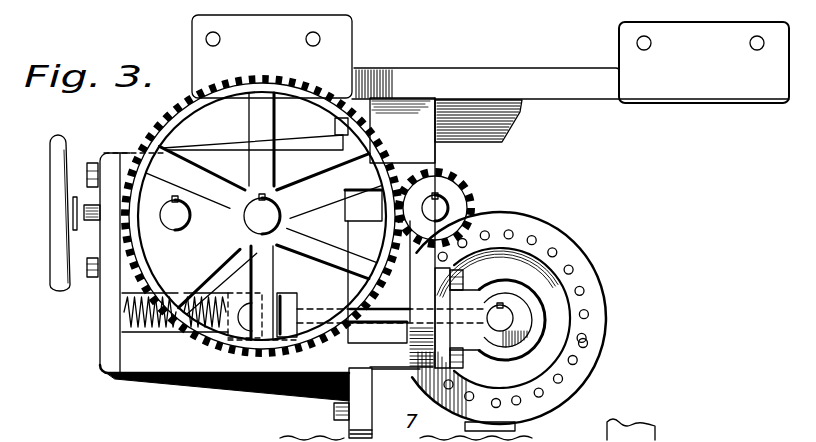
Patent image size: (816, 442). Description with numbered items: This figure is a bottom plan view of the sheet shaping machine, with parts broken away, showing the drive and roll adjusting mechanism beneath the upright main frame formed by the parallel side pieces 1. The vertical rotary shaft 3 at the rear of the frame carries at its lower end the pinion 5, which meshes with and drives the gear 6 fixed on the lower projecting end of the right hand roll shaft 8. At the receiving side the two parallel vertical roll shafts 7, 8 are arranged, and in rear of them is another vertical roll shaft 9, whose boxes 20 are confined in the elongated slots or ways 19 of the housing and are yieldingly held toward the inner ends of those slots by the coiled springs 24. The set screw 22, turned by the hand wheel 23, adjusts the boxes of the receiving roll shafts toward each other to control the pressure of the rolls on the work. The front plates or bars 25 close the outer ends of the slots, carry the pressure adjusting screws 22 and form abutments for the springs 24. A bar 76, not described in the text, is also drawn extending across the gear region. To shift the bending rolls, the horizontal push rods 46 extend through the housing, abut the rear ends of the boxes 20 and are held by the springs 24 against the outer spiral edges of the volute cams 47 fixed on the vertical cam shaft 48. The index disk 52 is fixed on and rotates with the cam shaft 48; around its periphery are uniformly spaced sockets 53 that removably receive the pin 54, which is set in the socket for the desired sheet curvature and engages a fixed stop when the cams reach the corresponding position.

The side pieces 1 is at (599, 97).
The vertical rotary shaft 3 is at (438, 203).
The pinion 5 is at (462, 183).
The gear 6 is at (318, 237).
The roll shaft 7 is at (177, 227).
The roll shaft 8 is at (262, 228).
The roll shaft 9 is at (252, 307).
The slots or ways 19 is at (170, 336).
The boxes 20 is at (295, 295).
The set screw 22 is at (76, 222).
The hand wheel 23 is at (62, 281).
The coiled springs 24 is at (150, 313).
The front plates or bars 25 is at (107, 316).
The push rods 46 is at (385, 317).
The volute cams 47 is at (545, 316).
The cam shaft 48 is at (502, 311).
The index disk 52 is at (590, 371).
The perforations or sockets 53 is at (583, 343).
The pin 54 is at (497, 403).
The bar 76 is at (213, 160).